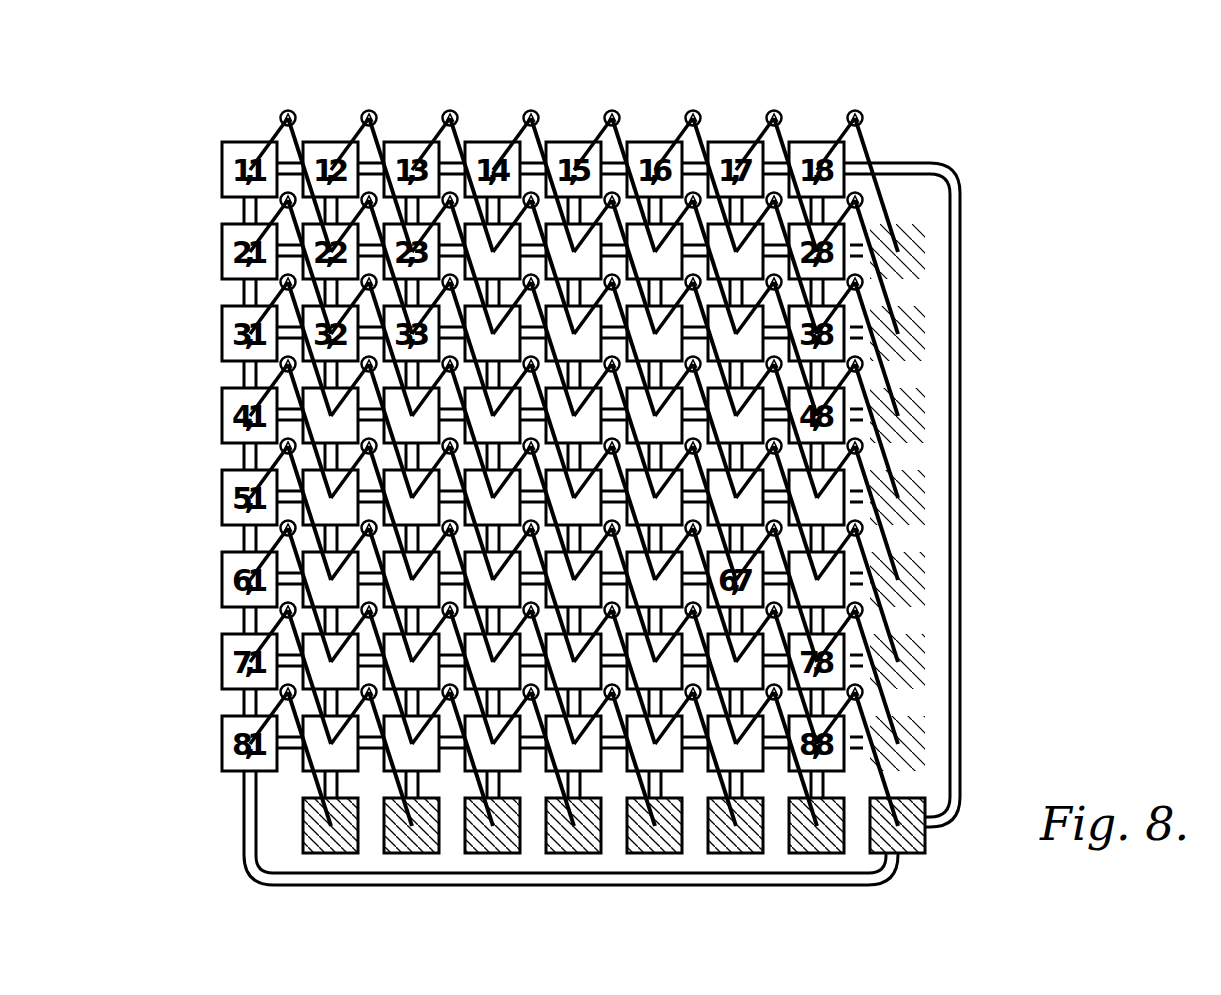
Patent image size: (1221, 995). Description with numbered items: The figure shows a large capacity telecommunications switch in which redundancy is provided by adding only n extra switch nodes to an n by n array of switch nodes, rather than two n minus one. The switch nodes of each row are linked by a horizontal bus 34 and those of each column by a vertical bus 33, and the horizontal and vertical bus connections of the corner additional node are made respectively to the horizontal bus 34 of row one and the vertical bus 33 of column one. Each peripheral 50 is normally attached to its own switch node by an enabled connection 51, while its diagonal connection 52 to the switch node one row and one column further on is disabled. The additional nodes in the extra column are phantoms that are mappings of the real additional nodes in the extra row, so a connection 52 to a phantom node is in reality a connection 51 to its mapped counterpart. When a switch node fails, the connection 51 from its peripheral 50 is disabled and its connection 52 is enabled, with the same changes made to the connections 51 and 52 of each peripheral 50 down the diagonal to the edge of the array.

The peripheral 50 is at (693, 118).
The connection 51 is at (273, 300).
The connection 52 is at (892, 190).
The vertical bus 33 is at (250, 528).
The horizontal bus 34 is at (285, 741).